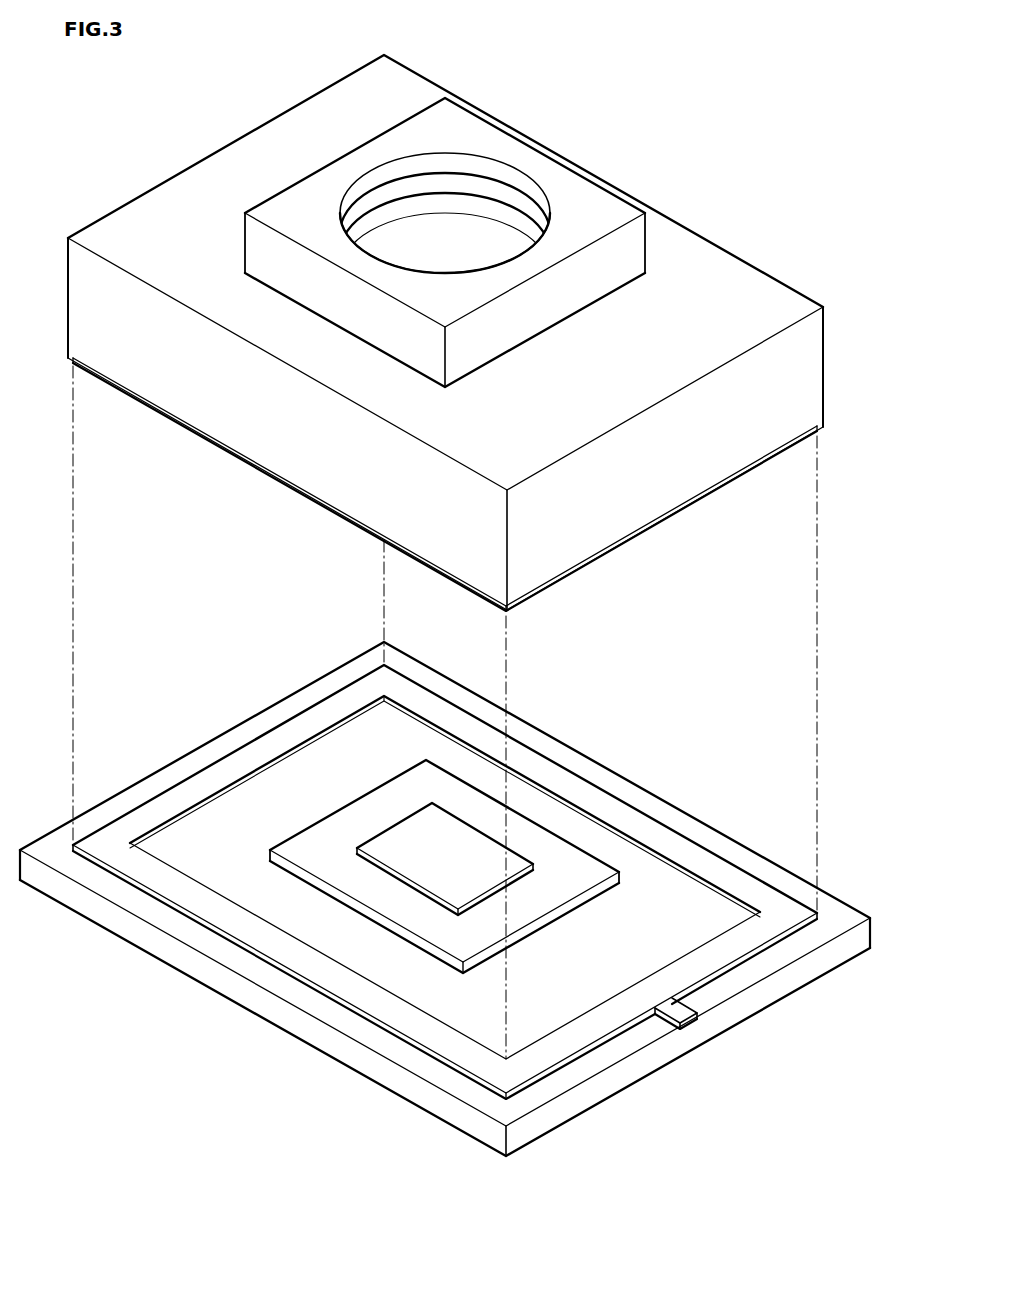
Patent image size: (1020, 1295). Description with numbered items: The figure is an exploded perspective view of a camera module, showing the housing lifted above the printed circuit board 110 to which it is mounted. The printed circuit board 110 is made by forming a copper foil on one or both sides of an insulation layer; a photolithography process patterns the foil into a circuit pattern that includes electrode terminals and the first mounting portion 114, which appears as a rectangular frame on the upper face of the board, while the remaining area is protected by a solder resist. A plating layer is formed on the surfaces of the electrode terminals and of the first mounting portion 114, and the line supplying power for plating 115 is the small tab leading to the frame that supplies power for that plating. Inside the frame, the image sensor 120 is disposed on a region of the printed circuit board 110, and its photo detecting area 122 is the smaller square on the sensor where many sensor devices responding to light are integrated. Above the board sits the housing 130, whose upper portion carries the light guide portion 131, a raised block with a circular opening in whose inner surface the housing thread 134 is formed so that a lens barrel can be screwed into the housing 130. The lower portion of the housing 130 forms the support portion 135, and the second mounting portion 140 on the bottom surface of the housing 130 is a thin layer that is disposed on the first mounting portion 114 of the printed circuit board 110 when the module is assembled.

The printed circuit board 110 is at (350, 1025).
The first mounting portion 114 is at (682, 848).
The line supplying power for plating 115 is at (678, 998).
The image sensor 120 is at (376, 880).
The photo detecting area 122 is at (455, 853).
The housing 130 is at (487, 333).
The light guide portion 131 is at (642, 247).
The housing thread 134 is at (498, 195).
The support portion 135 is at (808, 372).
The second mounting portion 140 is at (666, 519).